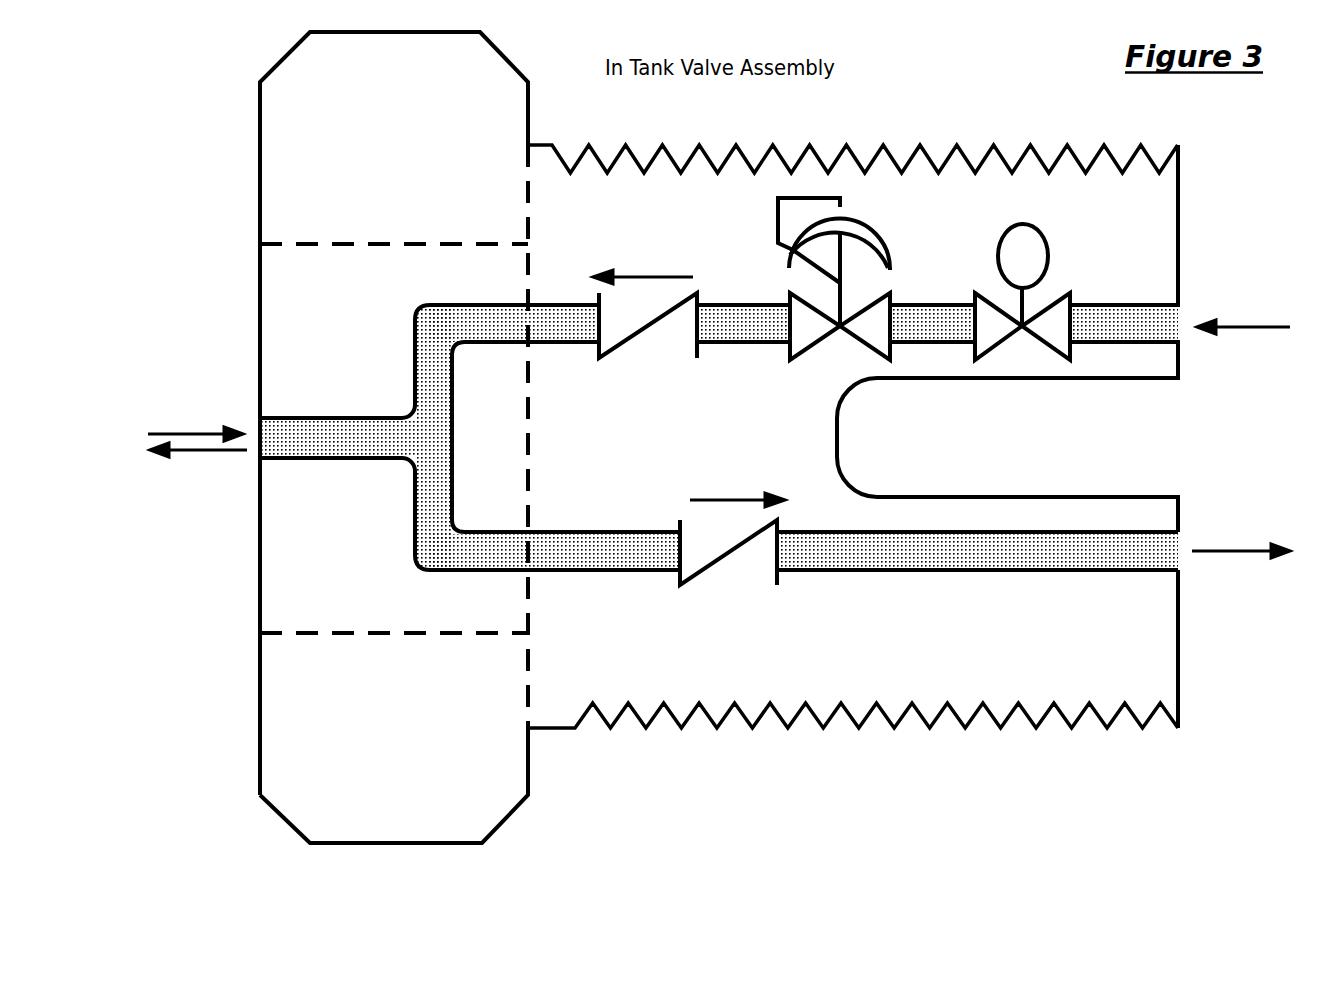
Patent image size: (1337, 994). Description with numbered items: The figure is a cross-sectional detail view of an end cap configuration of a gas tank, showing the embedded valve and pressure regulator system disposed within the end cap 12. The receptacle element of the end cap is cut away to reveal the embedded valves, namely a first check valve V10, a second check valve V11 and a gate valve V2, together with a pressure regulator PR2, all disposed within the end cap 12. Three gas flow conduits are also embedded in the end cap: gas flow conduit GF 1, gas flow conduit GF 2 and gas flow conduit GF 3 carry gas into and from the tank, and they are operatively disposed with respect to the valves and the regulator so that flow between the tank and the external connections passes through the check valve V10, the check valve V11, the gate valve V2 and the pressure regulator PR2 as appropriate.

The end cap 12 is at (803, 732).
The gas flow conduit GF 1 is at (194, 417).
The gas flow conduit GF 2 is at (1232, 296).
The gas flow conduit GF 3 is at (1231, 585).
The check valve V10 is at (652, 360).
The check valve V11 is at (720, 586).
The pressure regulator PR2 is at (778, 221).
The gate valve V2 is at (1030, 226).